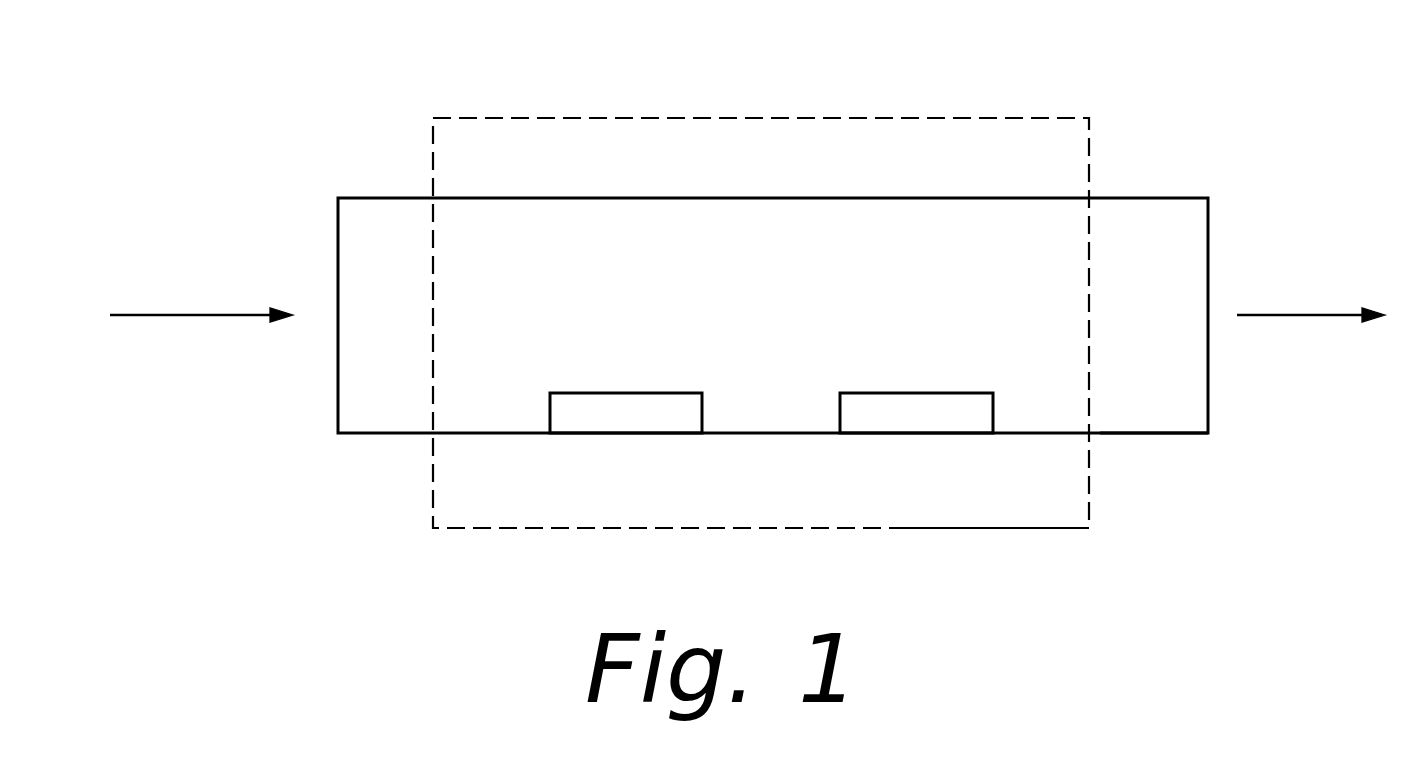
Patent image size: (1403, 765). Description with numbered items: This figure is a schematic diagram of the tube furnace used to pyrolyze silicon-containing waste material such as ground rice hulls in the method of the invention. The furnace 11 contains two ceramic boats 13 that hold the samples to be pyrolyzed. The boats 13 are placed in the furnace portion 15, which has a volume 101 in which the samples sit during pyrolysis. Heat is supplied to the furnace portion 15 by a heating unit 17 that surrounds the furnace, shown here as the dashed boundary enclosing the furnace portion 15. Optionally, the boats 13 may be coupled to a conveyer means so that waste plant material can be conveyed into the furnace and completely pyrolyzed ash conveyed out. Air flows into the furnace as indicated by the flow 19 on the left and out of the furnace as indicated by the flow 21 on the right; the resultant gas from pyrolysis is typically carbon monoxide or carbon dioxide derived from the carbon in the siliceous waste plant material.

The furnace 11 is at (573, 82).
The volume 101 is at (762, 308).
The ceramic boats 13 is at (637, 419).
The furnace portion 15 is at (1150, 433).
The heating unit 17 is at (1022, 528).
The flow 19 is at (192, 315).
The flow 21 is at (1312, 315).